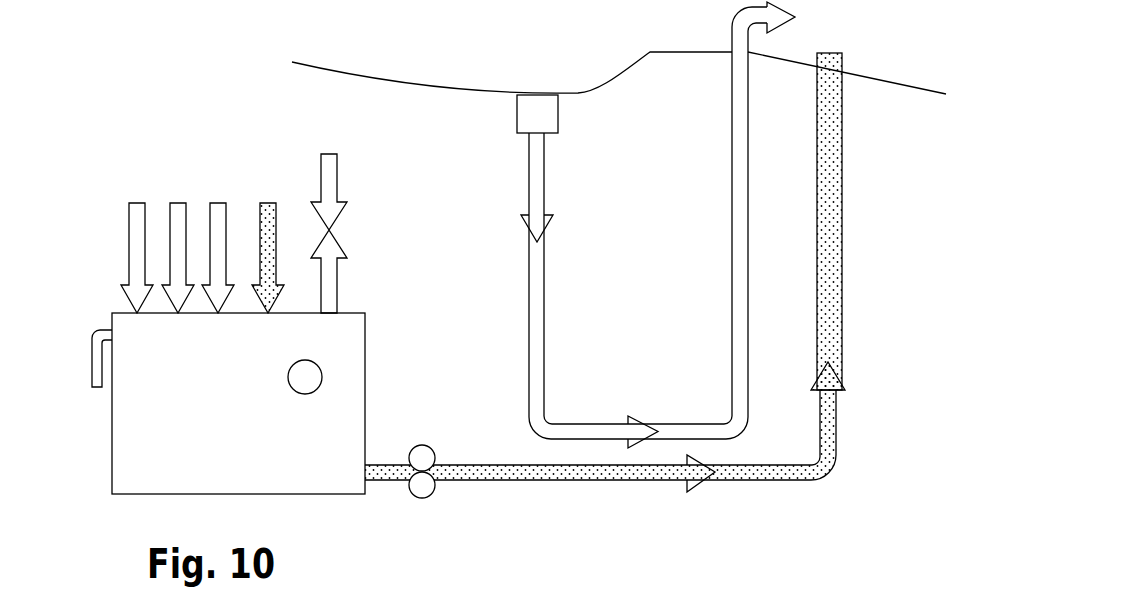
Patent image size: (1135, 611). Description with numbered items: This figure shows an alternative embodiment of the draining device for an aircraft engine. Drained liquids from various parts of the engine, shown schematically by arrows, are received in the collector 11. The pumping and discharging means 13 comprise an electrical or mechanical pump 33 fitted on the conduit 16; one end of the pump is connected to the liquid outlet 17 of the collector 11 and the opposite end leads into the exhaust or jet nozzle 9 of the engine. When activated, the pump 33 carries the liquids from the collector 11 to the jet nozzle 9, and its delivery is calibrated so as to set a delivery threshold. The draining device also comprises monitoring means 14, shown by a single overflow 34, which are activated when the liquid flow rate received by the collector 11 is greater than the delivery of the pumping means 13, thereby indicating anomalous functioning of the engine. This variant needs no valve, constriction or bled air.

The exhaust nozzle 9 is at (893, 82).
The collector 11 is at (303, 495).
The pumping and discharging means 13 is at (484, 505).
The pump 33 is at (440, 517).
The monitoring means 14 is at (318, 364).
The conduit 16 is at (840, 232).
The liquid outlet 17 is at (344, 470).
The overflow 34 is at (92, 370).